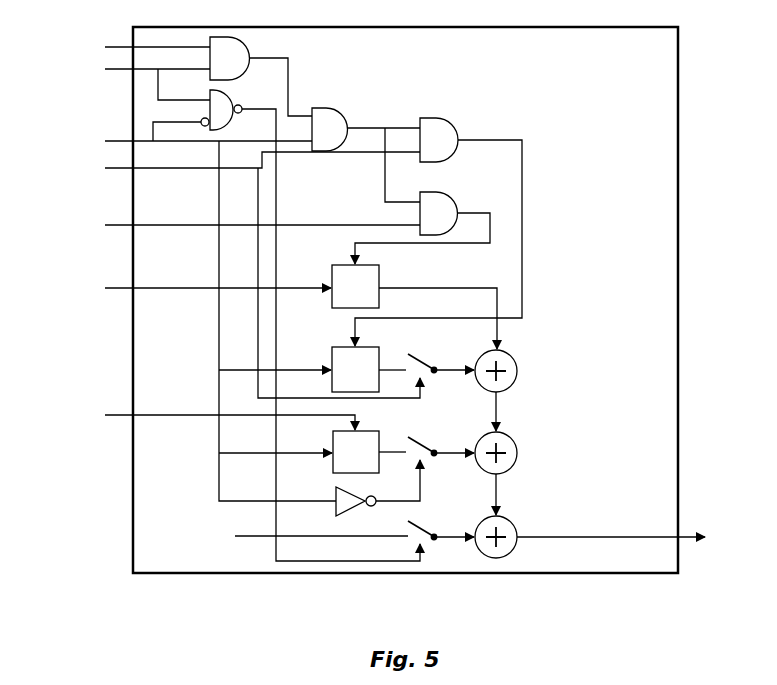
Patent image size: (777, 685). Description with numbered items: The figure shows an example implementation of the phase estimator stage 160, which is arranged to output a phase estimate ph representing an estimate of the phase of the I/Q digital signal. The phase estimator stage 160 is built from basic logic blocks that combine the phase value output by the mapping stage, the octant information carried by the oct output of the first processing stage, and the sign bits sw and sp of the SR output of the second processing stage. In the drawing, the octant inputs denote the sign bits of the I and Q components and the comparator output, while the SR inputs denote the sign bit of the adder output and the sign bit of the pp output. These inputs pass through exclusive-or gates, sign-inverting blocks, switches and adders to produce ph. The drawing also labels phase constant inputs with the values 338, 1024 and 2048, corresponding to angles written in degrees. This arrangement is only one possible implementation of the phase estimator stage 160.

The phase estimator stage 160 is at (380, 344).
The 29.745 degree phase constant input 338 is at (235, 370).
The 90 degree phase constant input 1024 is at (242, 454).
The 180 degree phase constant input 2048 is at (289, 537).